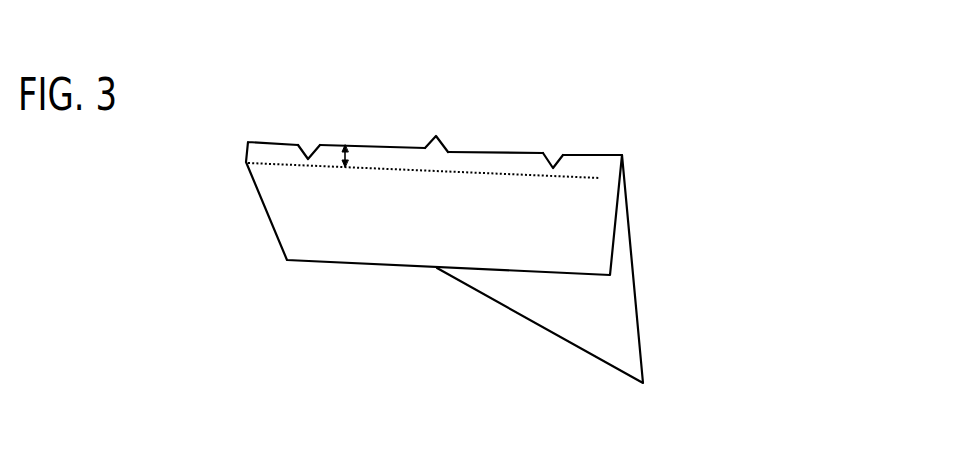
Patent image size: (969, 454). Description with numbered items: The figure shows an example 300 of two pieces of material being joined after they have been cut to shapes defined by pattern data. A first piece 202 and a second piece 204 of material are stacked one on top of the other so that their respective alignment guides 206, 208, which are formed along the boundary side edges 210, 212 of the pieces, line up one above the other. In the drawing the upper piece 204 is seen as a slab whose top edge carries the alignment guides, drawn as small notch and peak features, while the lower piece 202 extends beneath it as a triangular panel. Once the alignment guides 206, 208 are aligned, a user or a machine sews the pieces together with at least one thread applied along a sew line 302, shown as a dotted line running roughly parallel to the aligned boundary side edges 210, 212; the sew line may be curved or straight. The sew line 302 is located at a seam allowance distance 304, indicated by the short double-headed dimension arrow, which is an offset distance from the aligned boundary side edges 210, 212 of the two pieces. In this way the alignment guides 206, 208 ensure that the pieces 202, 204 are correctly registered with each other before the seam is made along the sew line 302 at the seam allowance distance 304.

The first piece of material 202 is at (605, 322).
The second piece of material 204 is at (445, 225).
The alignment guide of first piece 206 is at (564, 139).
The alignment guide of second piece 208 is at (381, 112).
The boundary side edge of first piece 210 is at (264, 125).
The boundary side edge of second piece 212 is at (309, 152).
The example of stacked pieces 300 is at (682, 122).
The sew line 302 is at (493, 173).
The seam allowance distance 304 is at (342, 163).